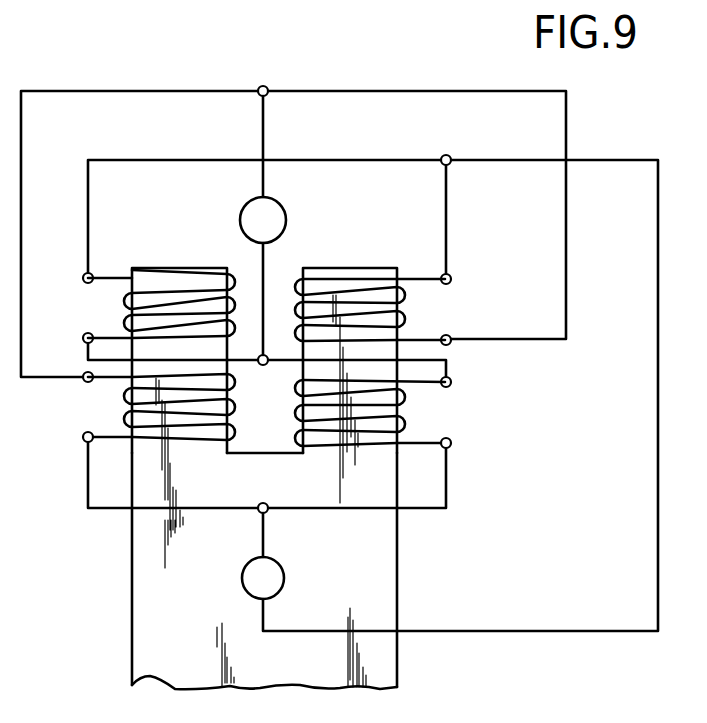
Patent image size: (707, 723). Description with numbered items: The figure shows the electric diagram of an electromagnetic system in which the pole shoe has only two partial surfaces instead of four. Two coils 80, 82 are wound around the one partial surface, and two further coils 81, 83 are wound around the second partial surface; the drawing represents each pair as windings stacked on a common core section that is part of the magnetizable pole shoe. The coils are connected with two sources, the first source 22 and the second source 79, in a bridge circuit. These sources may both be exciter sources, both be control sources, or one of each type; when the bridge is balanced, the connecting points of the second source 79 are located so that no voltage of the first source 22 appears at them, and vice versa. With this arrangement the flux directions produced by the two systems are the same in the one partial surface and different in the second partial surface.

The second source 79 is at (283, 207).
The exciter source 22 is at (268, 580).
The coil 80 is at (119, 269).
The coil 81 is at (421, 277).
The coil 82 is at (106, 432).
The coil 83 is at (423, 441).